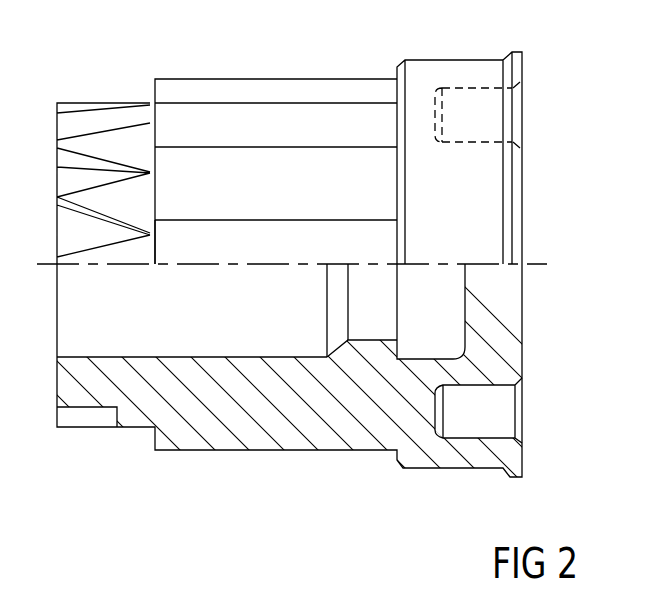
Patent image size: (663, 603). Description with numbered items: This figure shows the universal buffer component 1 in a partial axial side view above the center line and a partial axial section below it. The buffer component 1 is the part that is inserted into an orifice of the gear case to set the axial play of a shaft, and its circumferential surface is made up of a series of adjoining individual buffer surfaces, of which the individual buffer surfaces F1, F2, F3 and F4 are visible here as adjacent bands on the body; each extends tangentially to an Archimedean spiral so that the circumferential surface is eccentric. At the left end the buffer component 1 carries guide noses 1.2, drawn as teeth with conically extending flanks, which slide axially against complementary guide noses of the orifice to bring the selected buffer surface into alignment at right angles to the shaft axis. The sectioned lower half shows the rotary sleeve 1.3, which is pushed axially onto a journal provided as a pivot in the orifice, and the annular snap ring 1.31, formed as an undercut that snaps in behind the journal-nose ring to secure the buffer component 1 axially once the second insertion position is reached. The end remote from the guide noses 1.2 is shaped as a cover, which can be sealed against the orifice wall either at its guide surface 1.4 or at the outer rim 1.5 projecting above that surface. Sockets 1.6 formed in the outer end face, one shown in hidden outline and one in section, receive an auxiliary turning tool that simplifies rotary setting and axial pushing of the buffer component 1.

The buffer component 1 is at (322, 403).
The guide noses 1.2 is at (107, 113).
The rotary sleeve 1.3 is at (205, 355).
The annular snap ring 1.31 is at (373, 348).
The guide surface 1.4 is at (448, 60).
The outer rim 1.5 is at (518, 52).
The sockets 1.6 is at (470, 112).
The individual buffer surface F1 is at (218, 242).
The individual buffer surface F2 is at (276, 194).
The individual buffer surface F3 is at (276, 128).
The individual buffer surface F4 is at (265, 92).